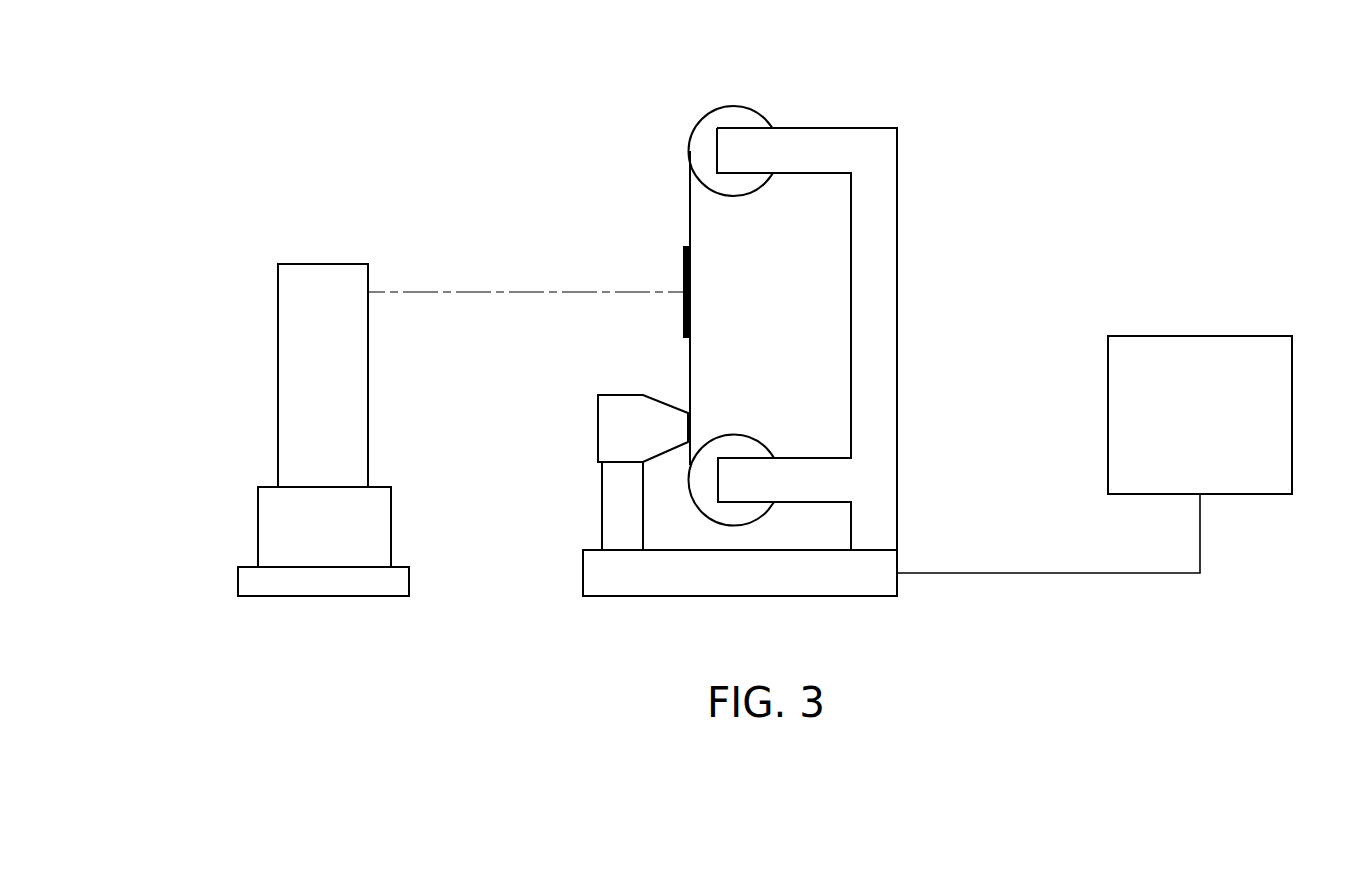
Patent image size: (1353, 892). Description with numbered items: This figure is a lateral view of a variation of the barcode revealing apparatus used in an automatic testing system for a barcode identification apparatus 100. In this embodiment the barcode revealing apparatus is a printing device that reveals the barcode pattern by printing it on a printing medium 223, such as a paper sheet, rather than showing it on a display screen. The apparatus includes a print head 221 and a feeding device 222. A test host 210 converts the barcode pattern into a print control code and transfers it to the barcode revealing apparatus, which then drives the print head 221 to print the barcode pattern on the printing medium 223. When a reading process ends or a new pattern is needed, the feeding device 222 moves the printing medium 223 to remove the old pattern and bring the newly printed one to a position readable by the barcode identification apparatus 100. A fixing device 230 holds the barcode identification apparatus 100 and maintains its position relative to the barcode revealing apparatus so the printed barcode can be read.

The barcode identification apparatus 100 is at (340, 264).
The test host 210 is at (1179, 442).
The print head 221 is at (598, 430).
The feeding device 222 is at (897, 237).
The printing medium 223 is at (689, 215).
The fixing device 230 is at (275, 525).